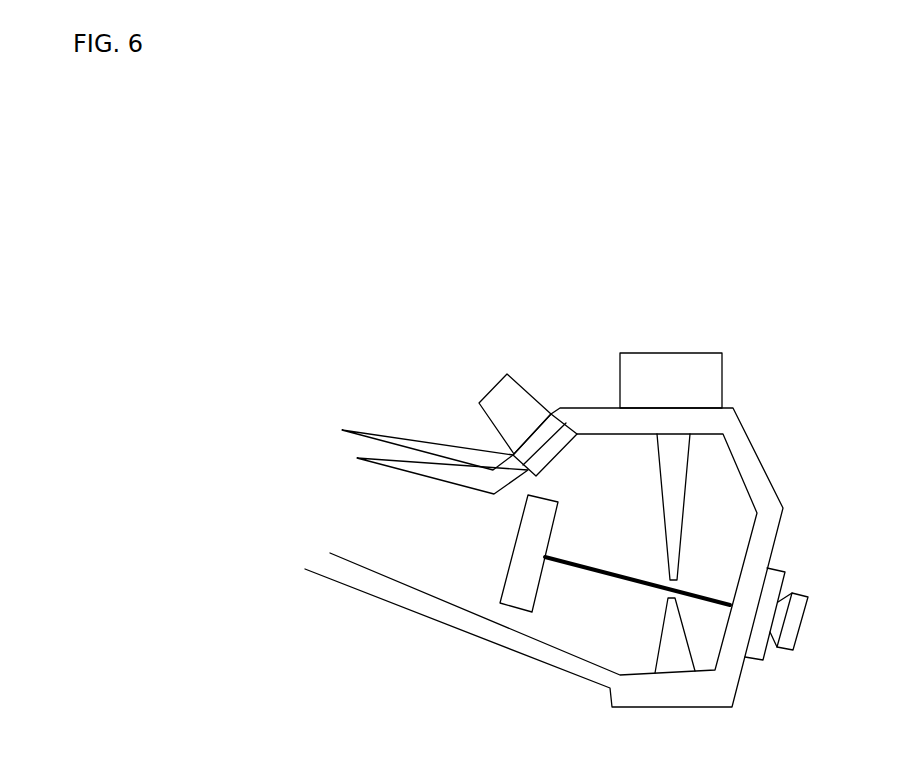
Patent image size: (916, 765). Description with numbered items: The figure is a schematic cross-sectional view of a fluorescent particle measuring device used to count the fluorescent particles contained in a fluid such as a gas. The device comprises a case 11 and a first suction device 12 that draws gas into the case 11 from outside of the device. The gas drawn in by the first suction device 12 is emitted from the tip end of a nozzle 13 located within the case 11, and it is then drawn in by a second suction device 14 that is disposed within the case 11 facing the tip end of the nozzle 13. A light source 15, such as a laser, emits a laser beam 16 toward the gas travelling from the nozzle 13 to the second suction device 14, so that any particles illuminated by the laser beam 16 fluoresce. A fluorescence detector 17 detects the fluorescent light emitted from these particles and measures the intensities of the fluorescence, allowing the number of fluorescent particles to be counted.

The case 11 is at (748, 462).
The first suction device 12 is at (713, 388).
The nozzle 13 is at (673, 487).
The second suction device 14 is at (673, 642).
The light source 15 is at (810, 628).
The laser beam 16 is at (600, 563).
The fluorescence detector 17 is at (487, 420).